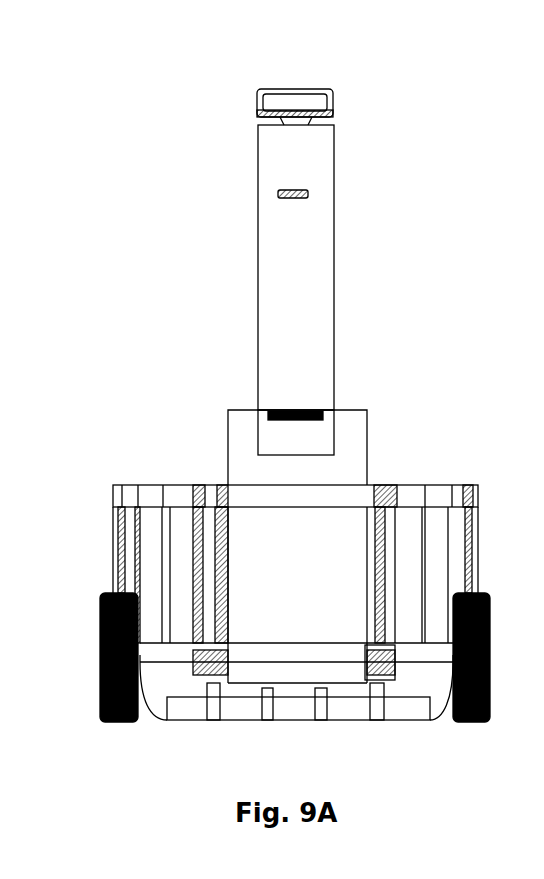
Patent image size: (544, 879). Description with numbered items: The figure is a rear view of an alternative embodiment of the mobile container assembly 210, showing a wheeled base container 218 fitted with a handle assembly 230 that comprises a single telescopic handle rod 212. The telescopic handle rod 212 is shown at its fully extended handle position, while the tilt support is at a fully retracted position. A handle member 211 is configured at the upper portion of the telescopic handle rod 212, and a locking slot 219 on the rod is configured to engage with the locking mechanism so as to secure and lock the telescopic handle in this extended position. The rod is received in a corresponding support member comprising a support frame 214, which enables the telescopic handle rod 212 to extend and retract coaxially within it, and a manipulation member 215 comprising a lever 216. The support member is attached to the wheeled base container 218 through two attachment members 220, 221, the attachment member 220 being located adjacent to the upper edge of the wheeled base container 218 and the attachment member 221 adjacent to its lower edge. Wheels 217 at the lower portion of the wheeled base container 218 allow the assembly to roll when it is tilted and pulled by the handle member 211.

The hand-held stretch film dispenser device 210 is at (188, 100).
The handle assembly 230 is at (272, 78).
The handle member 211 is at (323, 98).
The telescopic handle rod 212 is at (323, 278).
The locking slot 219 is at (302, 196).
The support frame 214 is at (240, 446).
The manipulation member 215 is at (325, 428).
The lever 216 is at (268, 413).
The attachment member 220 is at (385, 498).
The wheeled base container 218 is at (130, 547).
The wheels 217 is at (100, 695).
The attachment member 221 is at (390, 662).